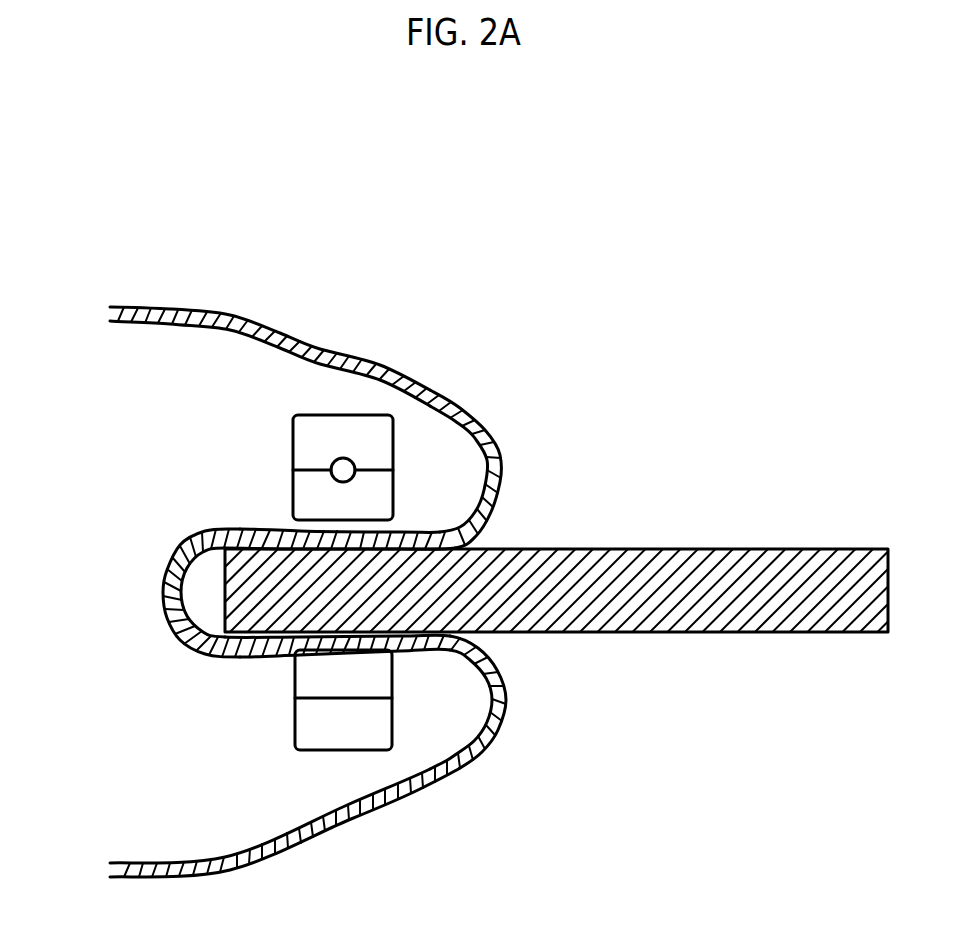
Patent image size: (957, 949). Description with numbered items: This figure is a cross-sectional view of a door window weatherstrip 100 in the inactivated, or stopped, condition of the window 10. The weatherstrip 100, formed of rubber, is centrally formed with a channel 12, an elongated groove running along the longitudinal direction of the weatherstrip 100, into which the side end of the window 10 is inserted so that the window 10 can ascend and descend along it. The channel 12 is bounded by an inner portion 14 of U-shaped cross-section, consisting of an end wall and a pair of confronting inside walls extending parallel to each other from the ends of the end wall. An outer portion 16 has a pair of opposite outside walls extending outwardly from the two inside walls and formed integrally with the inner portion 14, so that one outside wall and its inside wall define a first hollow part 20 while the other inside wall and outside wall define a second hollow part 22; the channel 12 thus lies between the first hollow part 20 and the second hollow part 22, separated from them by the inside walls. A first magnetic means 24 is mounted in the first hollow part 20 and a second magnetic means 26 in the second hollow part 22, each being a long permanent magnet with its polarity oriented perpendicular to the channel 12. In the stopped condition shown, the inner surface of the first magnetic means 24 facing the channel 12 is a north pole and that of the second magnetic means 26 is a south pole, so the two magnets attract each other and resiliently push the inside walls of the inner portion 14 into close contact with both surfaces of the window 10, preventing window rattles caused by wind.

The door window weatherstrip 100 is at (357, 503).
The window 10 is at (770, 580).
The channel 12 is at (163, 600).
The inner portion 14 is at (413, 533).
The outer portion 16 is at (413, 383).
The first hollow part 20 is at (453, 705).
The second hollow part 22 is at (447, 453).
The first magnetic means 24 is at (285, 722).
The second magnetic means 26 is at (285, 452).